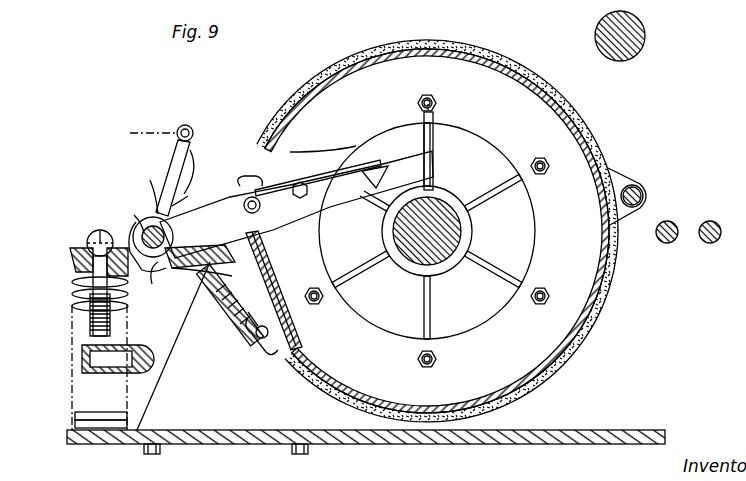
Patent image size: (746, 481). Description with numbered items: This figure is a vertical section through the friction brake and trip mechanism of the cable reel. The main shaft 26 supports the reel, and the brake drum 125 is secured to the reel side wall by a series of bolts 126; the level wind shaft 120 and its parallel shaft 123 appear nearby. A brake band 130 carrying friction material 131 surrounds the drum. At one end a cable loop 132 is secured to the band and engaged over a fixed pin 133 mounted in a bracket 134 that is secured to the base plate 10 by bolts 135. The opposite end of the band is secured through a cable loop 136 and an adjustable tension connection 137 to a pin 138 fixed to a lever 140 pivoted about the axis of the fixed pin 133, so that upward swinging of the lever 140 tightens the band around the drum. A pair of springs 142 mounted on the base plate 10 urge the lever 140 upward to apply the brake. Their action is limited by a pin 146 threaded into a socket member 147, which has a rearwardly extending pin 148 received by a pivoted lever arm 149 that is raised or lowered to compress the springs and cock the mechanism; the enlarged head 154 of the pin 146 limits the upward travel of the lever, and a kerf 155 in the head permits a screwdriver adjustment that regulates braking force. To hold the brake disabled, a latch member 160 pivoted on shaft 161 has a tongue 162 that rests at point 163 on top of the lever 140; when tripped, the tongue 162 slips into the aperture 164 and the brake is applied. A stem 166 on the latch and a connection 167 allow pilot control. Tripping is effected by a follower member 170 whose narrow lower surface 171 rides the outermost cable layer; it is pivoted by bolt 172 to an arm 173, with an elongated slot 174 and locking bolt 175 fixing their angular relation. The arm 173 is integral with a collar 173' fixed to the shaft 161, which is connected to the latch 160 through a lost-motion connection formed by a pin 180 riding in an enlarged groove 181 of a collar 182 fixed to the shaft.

The base plate 10 is at (382, 444).
The main shaft 26 is at (462, 230).
The level wind shaft 120 is at (644, 37).
The parallel shaft 123 is at (706, 220).
The brake drum 125 is at (498, 54).
The bolts 126 is at (546, 158).
The brake band 130 is at (286, 92).
The friction material 131 is at (343, 58).
The cable loop 132 is at (254, 242).
The fixed pin 133 is at (256, 262).
The bracket 134 is at (216, 444).
The bolts 135 is at (150, 454).
The cable loop 136 is at (270, 356).
The adjustable tension connection 137 is at (224, 328).
The pin 138 is at (202, 290).
The lever 140 is at (72, 254).
The springs 142 is at (74, 304).
The pin 146 is at (74, 278).
The socket member 147 is at (90, 328).
The rearwardly extending pin 148 is at (92, 378).
The lever arm 149 is at (150, 374).
The enlarged head 154 is at (90, 240).
The kerf 155 is at (98, 232).
The latch member 160 is at (168, 154).
The shaft 161 is at (152, 182).
The tongue 162 is at (176, 274).
The point 163 is at (200, 249).
The aperture 164 is at (150, 286).
The stem 166 is at (196, 140).
The connection 167 is at (130, 133).
The follower member 170 is at (432, 156).
The lower surface 171 is at (376, 190).
The bolt 172 is at (314, 156).
The arm 173 is at (296, 204).
The collar 173' is at (124, 207).
The elongated slot 174 is at (258, 188).
The locking bolt 175 is at (275, 199).
The pin 180 is at (190, 180).
The enlarged groove 181 is at (190, 202).
The collar 182 is at (138, 228).